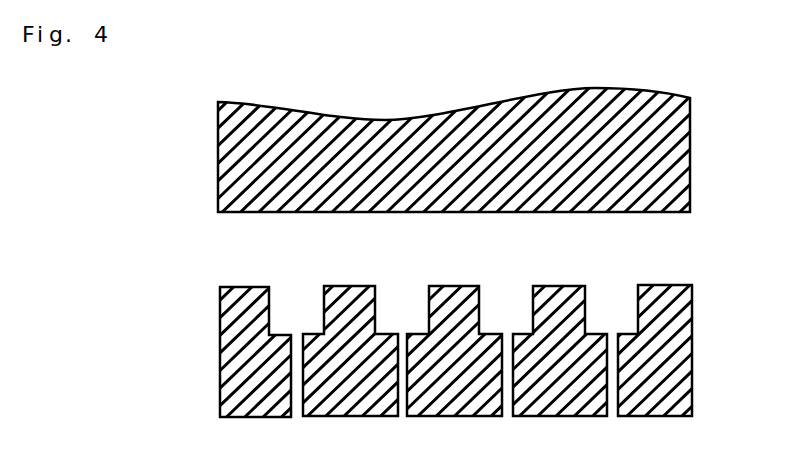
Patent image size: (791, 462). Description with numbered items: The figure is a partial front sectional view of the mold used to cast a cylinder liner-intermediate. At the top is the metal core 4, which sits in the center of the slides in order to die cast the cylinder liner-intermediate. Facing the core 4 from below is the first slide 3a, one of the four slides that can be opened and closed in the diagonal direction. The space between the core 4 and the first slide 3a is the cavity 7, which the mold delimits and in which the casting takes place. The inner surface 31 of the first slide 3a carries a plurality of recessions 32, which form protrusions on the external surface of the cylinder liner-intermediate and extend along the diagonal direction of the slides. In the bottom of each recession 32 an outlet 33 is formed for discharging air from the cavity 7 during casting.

The core 4 is at (690, 150).
The cavity 7 is at (606, 258).
The first slide 3a is at (467, 319).
The inner surface 31 is at (247, 287).
The recession 32 is at (428, 307).
The outlet 33 is at (300, 347).